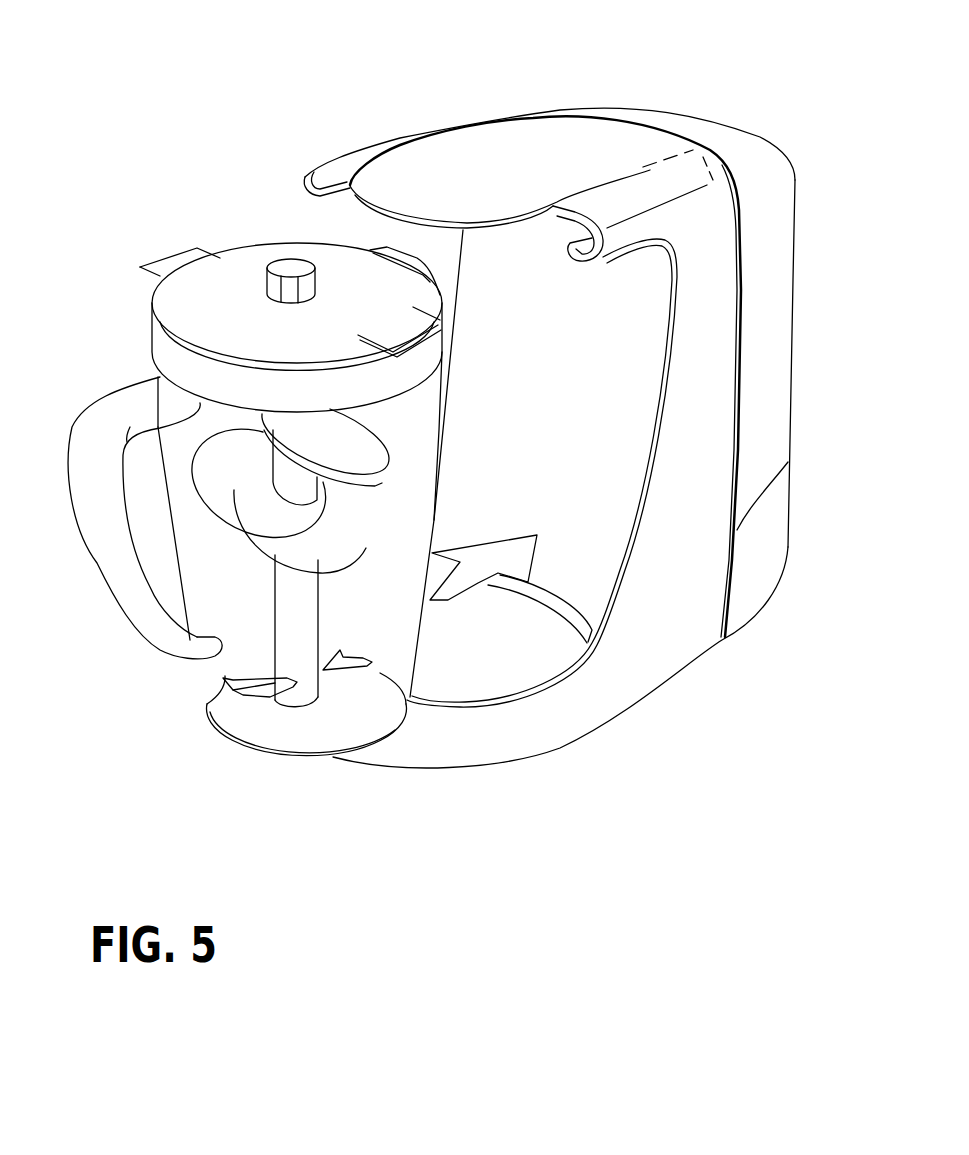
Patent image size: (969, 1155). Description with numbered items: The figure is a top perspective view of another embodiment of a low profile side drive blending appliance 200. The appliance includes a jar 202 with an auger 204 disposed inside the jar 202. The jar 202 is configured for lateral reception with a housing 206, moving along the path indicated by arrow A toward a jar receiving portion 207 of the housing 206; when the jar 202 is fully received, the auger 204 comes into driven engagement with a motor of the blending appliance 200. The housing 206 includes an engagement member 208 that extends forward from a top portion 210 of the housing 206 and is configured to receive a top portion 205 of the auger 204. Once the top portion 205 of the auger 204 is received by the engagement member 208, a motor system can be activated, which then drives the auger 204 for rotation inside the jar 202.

The blending appliance 200 is at (214, 170).
The jar 202 is at (207, 677).
The auger 204 is at (290, 623).
The top portion of the auger 205 is at (287, 267).
The housing 206 is at (717, 427).
The jar receiving portion 207 is at (635, 432).
The engagement member 208 is at (400, 177).
The top portion of the housing 210 is at (623, 133).